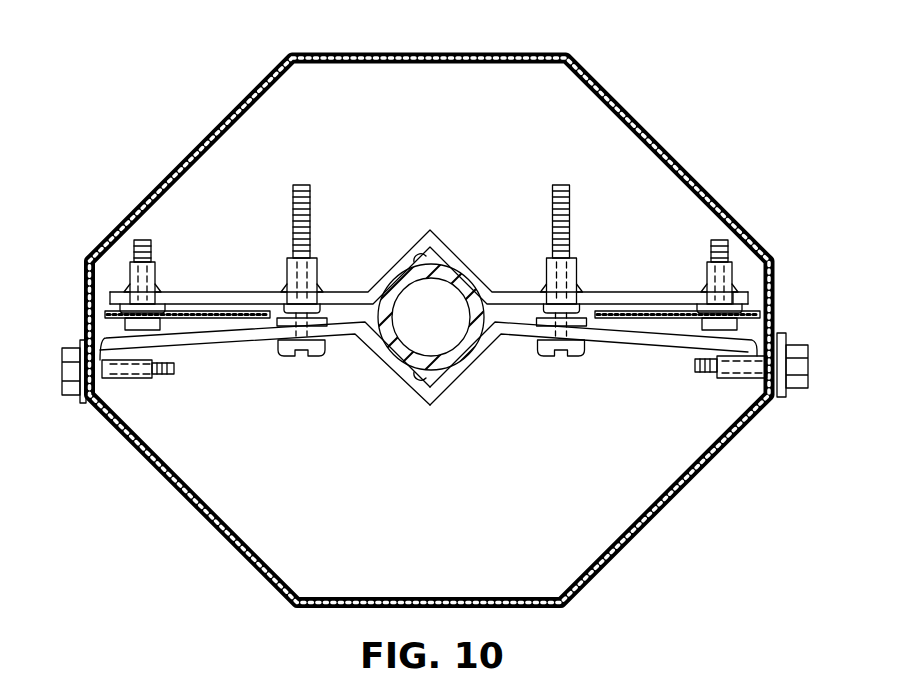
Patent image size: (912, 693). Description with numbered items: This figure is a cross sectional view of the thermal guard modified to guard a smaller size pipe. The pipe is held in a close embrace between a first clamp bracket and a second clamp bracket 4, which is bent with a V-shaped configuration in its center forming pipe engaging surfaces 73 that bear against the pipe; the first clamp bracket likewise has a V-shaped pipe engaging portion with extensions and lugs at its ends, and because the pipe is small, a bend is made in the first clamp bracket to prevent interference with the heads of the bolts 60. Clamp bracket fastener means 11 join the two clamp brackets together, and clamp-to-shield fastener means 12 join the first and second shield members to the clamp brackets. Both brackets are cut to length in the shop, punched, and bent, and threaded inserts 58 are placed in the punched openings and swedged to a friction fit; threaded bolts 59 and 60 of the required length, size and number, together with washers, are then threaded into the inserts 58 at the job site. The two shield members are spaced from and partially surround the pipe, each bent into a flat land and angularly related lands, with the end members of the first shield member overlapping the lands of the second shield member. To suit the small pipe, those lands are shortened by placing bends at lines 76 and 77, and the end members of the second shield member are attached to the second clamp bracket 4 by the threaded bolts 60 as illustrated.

The second clamp bracket 4 is at (613, 289).
The clamp bracket fastener means 11 is at (314, 208).
The clamp-to-shield fastener means 12 is at (173, 262).
The threaded insert 58 is at (165, 290).
The threaded bolt 59 is at (303, 184).
The threaded bolt 60 is at (150, 262).
The pipe engaging surface 73 is at (437, 256).
The bend line 76 is at (789, 346).
The bend line 77 is at (76, 346).